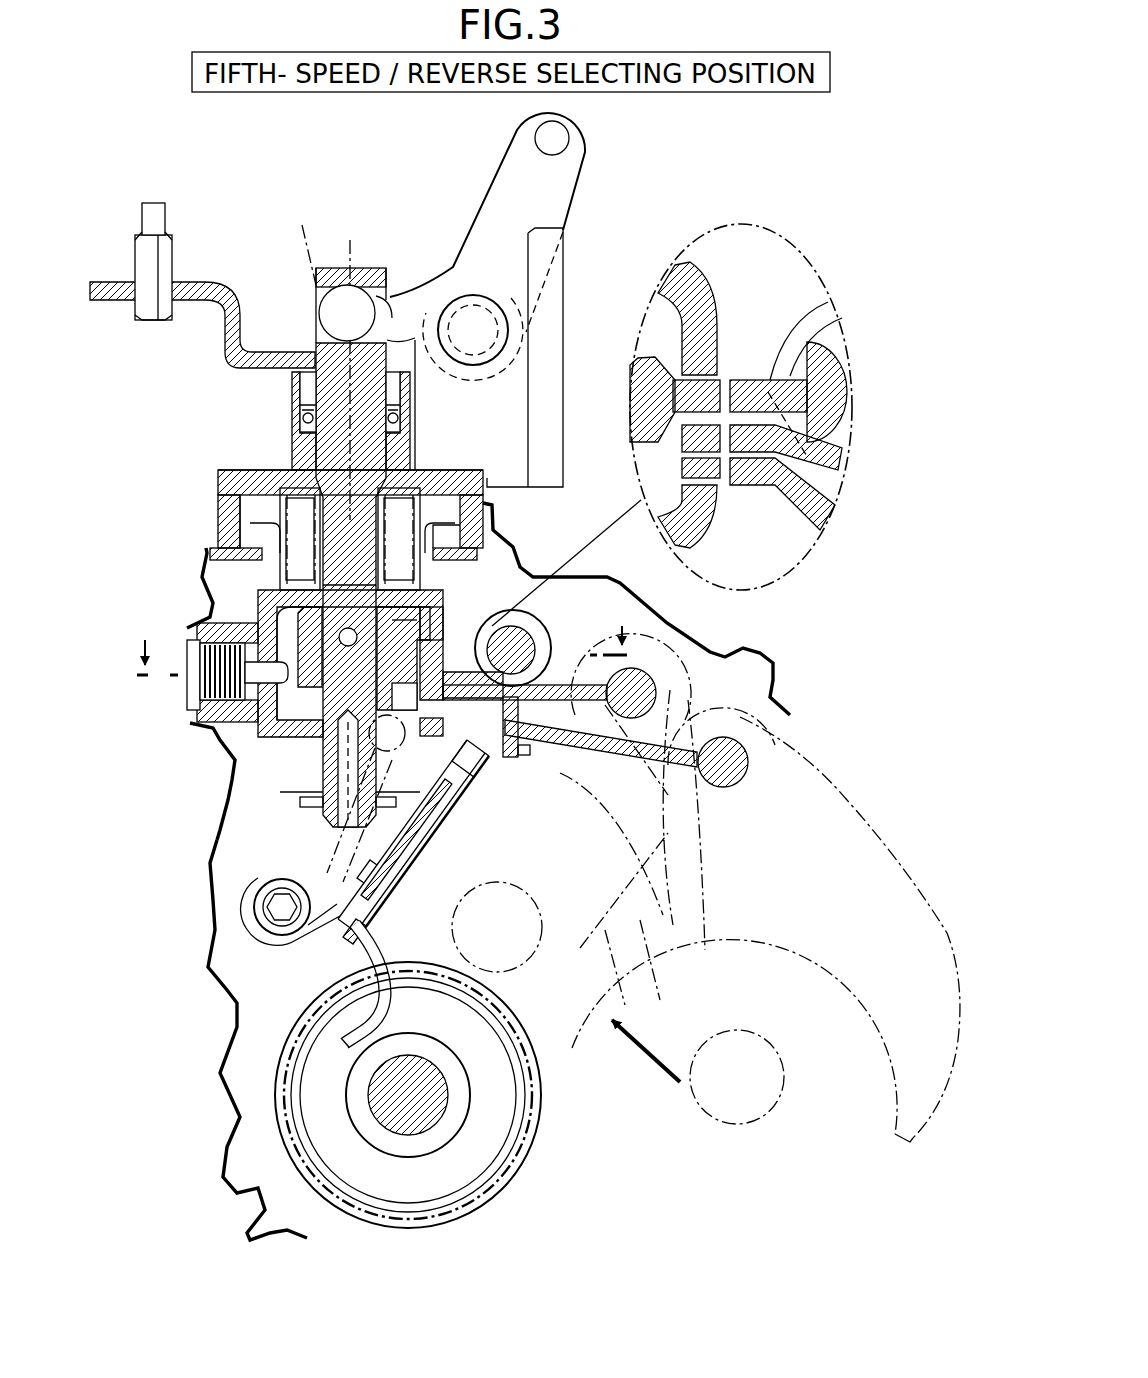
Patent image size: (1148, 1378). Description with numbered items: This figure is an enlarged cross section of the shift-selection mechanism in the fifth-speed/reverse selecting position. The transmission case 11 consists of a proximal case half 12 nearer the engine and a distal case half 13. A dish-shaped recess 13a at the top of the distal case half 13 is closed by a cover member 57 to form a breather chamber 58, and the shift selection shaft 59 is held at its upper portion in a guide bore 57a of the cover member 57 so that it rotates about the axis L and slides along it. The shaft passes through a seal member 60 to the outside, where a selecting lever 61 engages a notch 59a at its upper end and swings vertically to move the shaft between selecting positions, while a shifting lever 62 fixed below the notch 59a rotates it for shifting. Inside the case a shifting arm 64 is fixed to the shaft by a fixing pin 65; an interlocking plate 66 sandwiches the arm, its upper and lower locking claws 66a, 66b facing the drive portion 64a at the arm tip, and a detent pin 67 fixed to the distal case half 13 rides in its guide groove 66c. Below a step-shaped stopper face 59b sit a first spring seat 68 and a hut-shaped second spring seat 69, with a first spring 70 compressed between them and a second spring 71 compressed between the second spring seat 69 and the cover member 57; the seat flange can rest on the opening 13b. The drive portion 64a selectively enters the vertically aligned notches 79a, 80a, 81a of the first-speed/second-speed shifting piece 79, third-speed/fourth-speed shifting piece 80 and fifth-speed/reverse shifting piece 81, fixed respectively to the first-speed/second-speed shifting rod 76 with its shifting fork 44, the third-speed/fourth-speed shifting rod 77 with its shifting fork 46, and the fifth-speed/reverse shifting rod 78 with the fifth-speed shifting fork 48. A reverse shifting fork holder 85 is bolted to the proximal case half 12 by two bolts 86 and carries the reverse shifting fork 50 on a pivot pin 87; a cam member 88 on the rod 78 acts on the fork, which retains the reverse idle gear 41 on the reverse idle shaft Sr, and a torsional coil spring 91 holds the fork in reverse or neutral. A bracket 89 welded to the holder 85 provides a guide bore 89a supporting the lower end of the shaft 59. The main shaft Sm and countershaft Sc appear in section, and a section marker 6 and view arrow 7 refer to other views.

The transmission case 11 is at (206, 866).
The proximal case half 12 is at (237, 792).
The distal case half 13 is at (216, 518).
The dish-shaped recess 13a is at (252, 502).
The opening 13b is at (265, 562).
The reverse idle gear 41 is at (535, 1182).
The first-speed/second-speed shifting fork 44 is at (840, 937).
The third-speed/fourth-speed shifting fork 46 is at (700, 937).
The fifth-speed shifting fork 48 is at (706, 864).
The reverse shifting fork 50 is at (380, 923).
The cover member 57 is at (240, 466).
The guide bore 57a is at (363, 452).
The breather chamber 58 is at (452, 498).
The shift selection shaft 59 is at (336, 513).
The notch 59a is at (386, 283).
The step-shaped stopper face 59b is at (290, 497).
The seal member 60 is at (395, 425).
The selecting lever 61 is at (487, 235).
The shifting lever 62 is at (233, 310).
The shifting arm 64 is at (378, 661).
The drive portion 64a is at (422, 622).
The fixing pin 65 is at (348, 628).
The interlocking plate 66 is at (294, 742).
The upper locking claw 66a is at (430, 612).
The lower locking claw 66b is at (405, 738).
The guide groove 66c is at (265, 641).
The detent pin 67 is at (270, 685).
The first spring seat 68 is at (382, 530).
The second spring seat 69 is at (470, 537).
The first spring 70 is at (338, 490).
The second spring 71 is at (397, 578).
The first-speed/second-speed shifting rod 76 is at (720, 730).
The third-speed/fourth-speed shifting rod 77 is at (653, 697).
The fifth-speed/reverse shifting rod 78 is at (545, 640).
The first-speed/second-speed shifting piece 79 is at (585, 742).
The notch 79a is at (702, 462).
The third-speed/fourth-speed shifting piece 80 is at (565, 705).
The notch 80a is at (690, 440).
The fifth-speed/reverse shifting piece 81 is at (492, 624).
The notch 81a is at (742, 380).
The reverse shifting fork holder 85 is at (300, 940).
The bolts 86 is at (283, 905).
The pivot pin 87 is at (425, 858).
The cam member 88 is at (486, 770).
The bracket 89 is at (420, 846).
The guide bore 89a is at (336, 800).
The torsional coil spring 91 is at (328, 980).
The axis L is at (324, 358).
The main shaft Sm is at (503, 870).
The reverse idle shaft Sr is at (410, 1075).
The countershaft Sc is at (762, 1052).
The section line 6 is at (381, 630).
The view arrow 7 is at (651, 1051).